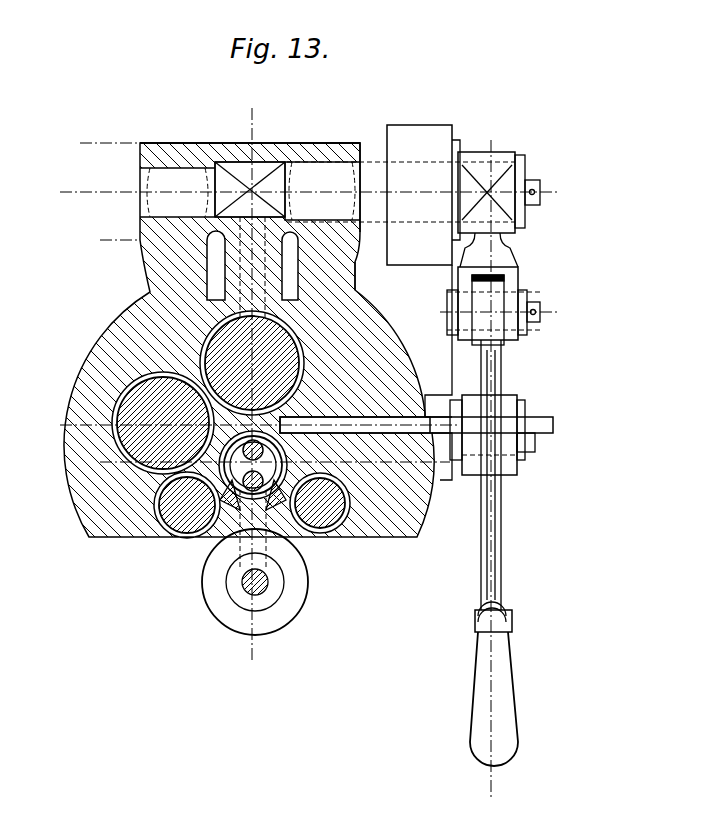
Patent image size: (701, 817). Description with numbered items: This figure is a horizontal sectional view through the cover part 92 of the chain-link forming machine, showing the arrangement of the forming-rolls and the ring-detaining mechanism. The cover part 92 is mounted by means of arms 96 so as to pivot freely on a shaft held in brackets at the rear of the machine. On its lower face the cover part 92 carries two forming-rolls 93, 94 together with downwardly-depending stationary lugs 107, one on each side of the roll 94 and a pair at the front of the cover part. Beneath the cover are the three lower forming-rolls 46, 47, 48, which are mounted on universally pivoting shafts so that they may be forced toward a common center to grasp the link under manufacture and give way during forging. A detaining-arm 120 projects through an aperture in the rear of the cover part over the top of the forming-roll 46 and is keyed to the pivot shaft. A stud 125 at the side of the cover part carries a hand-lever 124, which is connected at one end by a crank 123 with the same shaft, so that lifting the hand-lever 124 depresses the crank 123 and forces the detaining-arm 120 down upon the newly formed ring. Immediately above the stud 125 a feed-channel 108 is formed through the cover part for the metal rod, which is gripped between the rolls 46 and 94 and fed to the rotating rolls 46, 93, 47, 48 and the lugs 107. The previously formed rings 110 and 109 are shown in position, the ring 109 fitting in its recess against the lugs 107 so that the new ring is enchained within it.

The forming-roll 46 is at (236, 356).
The forming-roll 47 is at (187, 515).
The forming-roll 48 is at (312, 512).
The cover part 92 is at (127, 350).
The forming-roll 93 is at (142, 425).
The forming-roll 94 is at (244, 458).
The arm 96 is at (338, 268).
The stationary lug 107 is at (262, 452).
The feed-channel 108 is at (426, 480).
The formed ring 109 is at (265, 576).
The formed ring 110 is at (272, 616).
The detaining-arm 120 is at (242, 236).
The crank 123 is at (483, 252).
The hand-lever 124 is at (494, 684).
The stud 125 is at (434, 419).